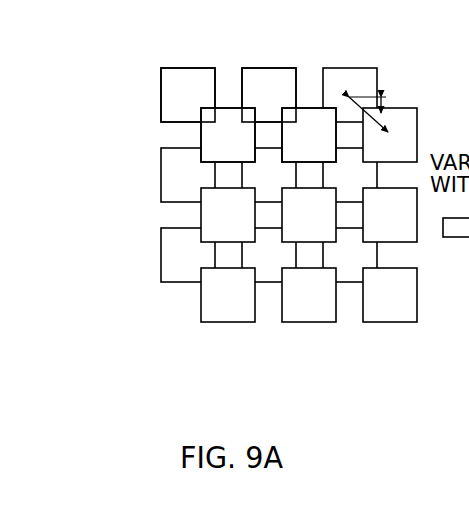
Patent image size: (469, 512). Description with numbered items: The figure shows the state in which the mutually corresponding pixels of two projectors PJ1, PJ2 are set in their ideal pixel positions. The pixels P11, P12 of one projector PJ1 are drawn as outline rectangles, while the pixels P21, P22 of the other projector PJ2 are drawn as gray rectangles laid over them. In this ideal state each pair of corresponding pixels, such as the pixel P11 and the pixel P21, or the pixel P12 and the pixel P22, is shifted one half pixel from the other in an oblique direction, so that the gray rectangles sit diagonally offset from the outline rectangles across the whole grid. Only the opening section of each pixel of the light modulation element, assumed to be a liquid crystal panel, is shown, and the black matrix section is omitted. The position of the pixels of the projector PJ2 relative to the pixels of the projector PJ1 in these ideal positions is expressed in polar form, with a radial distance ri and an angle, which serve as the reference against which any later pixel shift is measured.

The pixel P11 is at (186, 68).
The pixel P12 is at (258, 68).
The pixel P21 is at (201, 137).
The pixel P22 is at (305, 108).
The relative pixel position distance ri is at (380, 118).
The projector PJ1 is at (161, 257).
The projector PJ2 is at (201, 305).